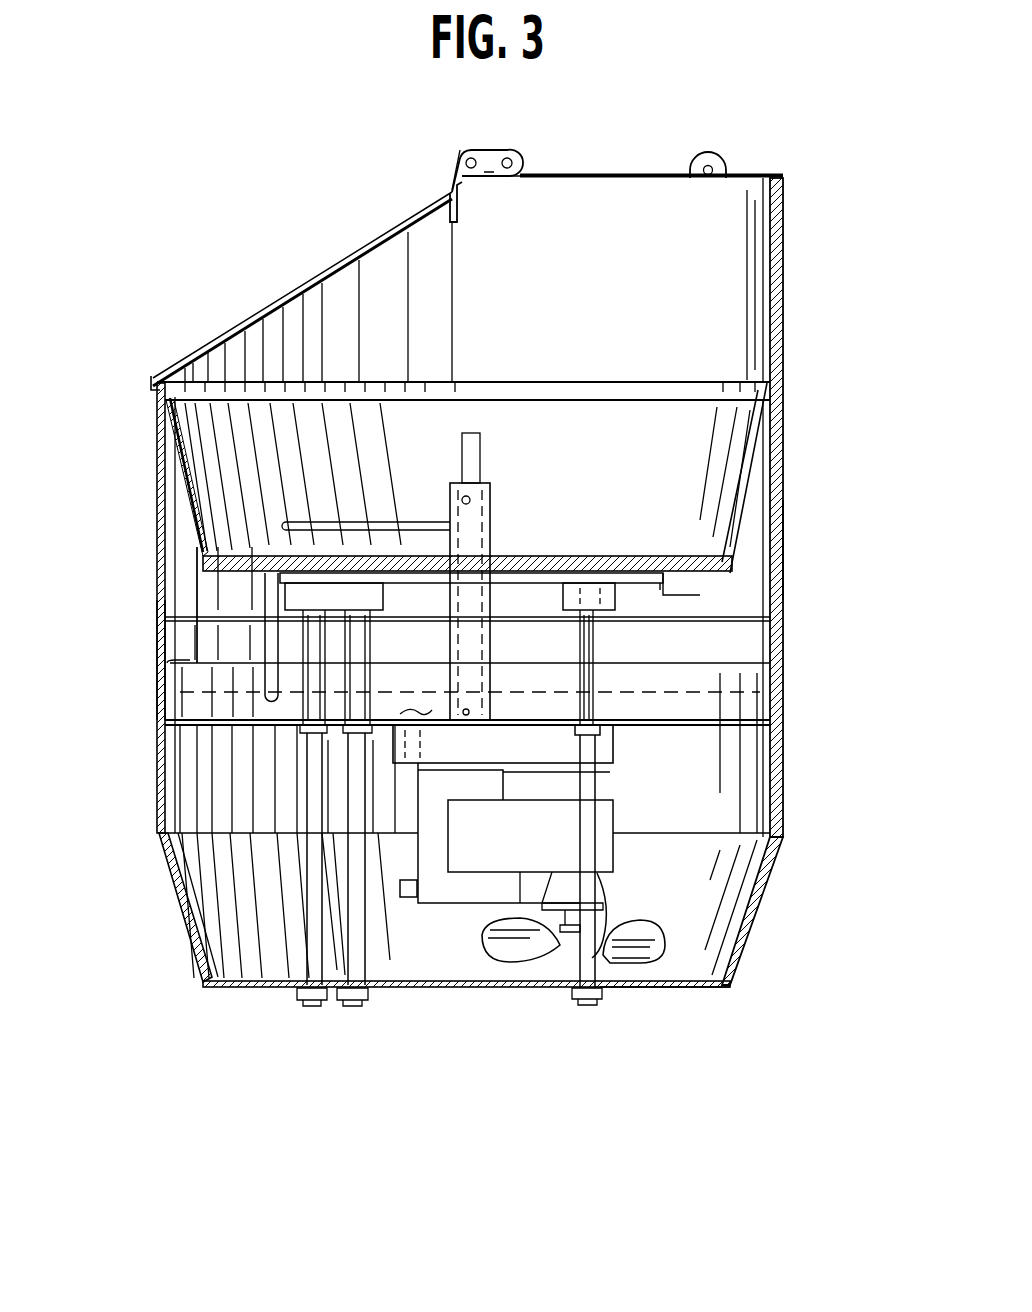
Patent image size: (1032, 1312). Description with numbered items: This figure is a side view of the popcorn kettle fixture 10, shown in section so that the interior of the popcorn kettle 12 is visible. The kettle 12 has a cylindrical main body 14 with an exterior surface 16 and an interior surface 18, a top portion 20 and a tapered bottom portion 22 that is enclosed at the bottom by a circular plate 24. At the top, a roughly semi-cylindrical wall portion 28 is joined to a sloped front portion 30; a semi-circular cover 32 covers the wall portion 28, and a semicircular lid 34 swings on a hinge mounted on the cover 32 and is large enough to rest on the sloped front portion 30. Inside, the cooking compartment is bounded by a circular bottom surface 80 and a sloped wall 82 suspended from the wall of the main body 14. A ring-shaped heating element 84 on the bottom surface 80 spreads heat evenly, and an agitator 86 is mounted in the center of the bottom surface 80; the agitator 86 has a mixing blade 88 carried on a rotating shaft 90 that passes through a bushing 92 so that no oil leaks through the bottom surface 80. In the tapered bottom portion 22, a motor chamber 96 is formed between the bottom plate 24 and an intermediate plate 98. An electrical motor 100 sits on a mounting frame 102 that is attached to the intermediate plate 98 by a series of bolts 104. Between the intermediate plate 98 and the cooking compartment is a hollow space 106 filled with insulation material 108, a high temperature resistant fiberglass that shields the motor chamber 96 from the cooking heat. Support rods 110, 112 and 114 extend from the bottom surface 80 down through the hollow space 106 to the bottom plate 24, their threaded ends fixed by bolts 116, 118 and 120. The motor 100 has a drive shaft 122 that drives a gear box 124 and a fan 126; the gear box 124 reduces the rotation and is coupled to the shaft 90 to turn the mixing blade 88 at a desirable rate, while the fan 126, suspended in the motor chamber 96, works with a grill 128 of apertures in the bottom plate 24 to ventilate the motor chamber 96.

The popcorn kettle fixture 10 is at (220, 197).
The popcorn kettle 12 is at (795, 541).
The cylindrical main body 14 is at (156, 498).
The exterior surface 16 is at (158, 630).
The interior surface 18 is at (262, 597).
The top portion 20 is at (618, 212).
The tapered bottom portion 22 is at (767, 874).
The circular plate 24 is at (712, 990).
The semi-cylindrical wall portion 28 is at (738, 340).
The sloped front portion 30 is at (303, 303).
The semi-circular cover 32 is at (667, 173).
The semicircular lid 34 is at (377, 232).
The bottom surface 80 is at (650, 588).
The sloped wall 82 is at (778, 455).
The heating element 84 is at (660, 592).
The agitator 86 is at (476, 452).
The mixing blade 88 is at (353, 522).
The rotating shaft 90 is at (344, 299).
The bushing 92 is at (440, 553).
The motor chamber 96 is at (740, 787).
The intermediate plate 98 is at (200, 748).
The electrical motor 100 is at (470, 895).
The mounting frame 102 is at (542, 785).
The bolts 104 is at (613, 745).
The hollow space 106 is at (198, 647).
The insulation material 108 is at (188, 677).
The support rod 110 is at (307, 852).
The support rod 112 is at (350, 862).
The support rod 114 is at (617, 853).
The bolt 116 is at (315, 1000).
The bolt 118 is at (370, 995).
The bolt 120 is at (593, 995).
The drive shaft 122 is at (437, 680).
The gear box 124 is at (610, 872).
The fan 126 is at (518, 965).
The grill 128 is at (660, 990).